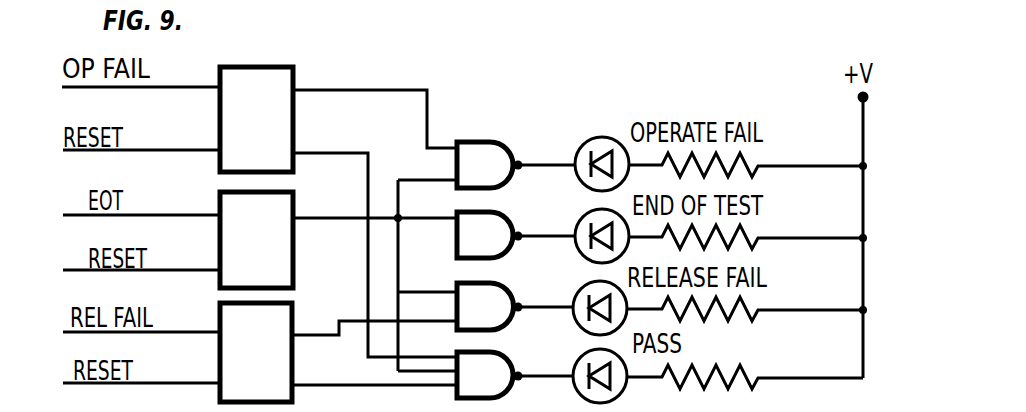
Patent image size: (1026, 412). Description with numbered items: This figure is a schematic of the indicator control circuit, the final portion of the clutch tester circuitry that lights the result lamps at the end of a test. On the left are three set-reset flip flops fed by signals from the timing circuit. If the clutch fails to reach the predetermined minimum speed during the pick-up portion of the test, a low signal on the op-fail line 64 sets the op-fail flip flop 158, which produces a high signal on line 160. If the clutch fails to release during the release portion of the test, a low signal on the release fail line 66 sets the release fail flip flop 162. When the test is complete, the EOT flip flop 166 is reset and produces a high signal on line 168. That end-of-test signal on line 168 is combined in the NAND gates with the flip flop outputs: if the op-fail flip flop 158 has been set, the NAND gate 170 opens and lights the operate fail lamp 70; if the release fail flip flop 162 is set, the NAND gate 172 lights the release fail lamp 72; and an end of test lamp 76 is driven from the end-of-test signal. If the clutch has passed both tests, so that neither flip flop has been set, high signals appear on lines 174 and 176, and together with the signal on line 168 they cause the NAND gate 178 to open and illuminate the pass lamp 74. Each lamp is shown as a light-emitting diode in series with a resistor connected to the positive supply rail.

The op-fail line 64 is at (190, 86).
The release fail line 66 is at (192, 331).
The op-fail flip flop 158 is at (283, 66).
The line 160 is at (368, 89).
The release fail flip flop 162 is at (306, 292).
The EOT flip flop 166 is at (293, 193).
The line 168 is at (350, 217).
The NAND gate 170 is at (497, 142).
The NAND gate 172 is at (500, 288).
The line 174 is at (302, 152).
The line 176 is at (374, 370).
The NAND gate 178 is at (564, 374).
The operate fail lamp 70 is at (592, 139).
The release fail lamp 72 is at (580, 297).
The pass lamp 74 is at (577, 389).
The end of test lamp 76 is at (581, 213).